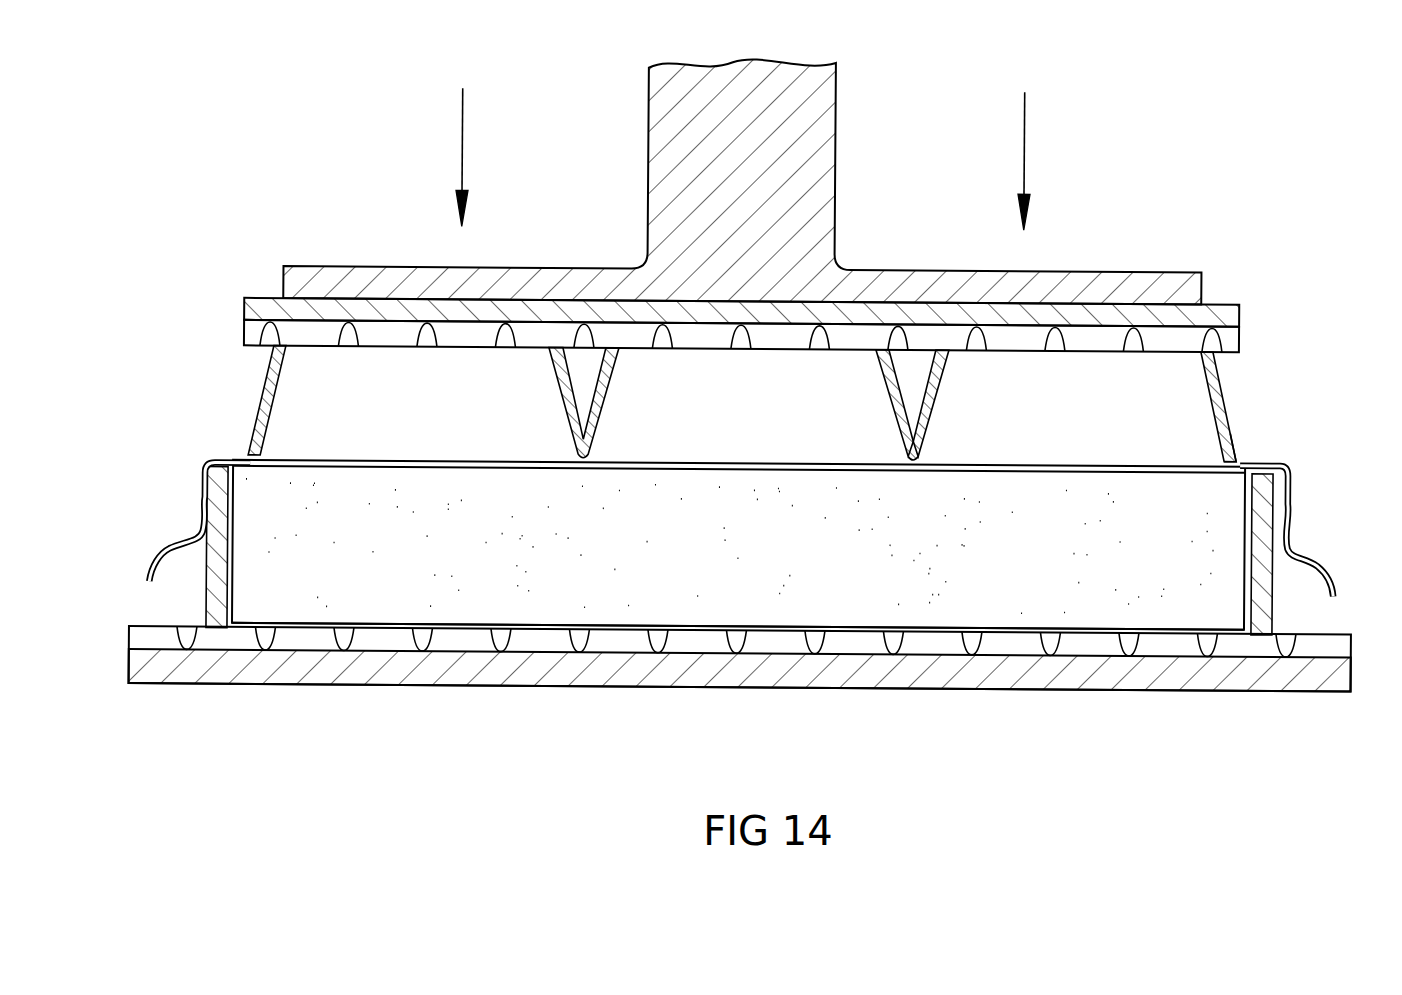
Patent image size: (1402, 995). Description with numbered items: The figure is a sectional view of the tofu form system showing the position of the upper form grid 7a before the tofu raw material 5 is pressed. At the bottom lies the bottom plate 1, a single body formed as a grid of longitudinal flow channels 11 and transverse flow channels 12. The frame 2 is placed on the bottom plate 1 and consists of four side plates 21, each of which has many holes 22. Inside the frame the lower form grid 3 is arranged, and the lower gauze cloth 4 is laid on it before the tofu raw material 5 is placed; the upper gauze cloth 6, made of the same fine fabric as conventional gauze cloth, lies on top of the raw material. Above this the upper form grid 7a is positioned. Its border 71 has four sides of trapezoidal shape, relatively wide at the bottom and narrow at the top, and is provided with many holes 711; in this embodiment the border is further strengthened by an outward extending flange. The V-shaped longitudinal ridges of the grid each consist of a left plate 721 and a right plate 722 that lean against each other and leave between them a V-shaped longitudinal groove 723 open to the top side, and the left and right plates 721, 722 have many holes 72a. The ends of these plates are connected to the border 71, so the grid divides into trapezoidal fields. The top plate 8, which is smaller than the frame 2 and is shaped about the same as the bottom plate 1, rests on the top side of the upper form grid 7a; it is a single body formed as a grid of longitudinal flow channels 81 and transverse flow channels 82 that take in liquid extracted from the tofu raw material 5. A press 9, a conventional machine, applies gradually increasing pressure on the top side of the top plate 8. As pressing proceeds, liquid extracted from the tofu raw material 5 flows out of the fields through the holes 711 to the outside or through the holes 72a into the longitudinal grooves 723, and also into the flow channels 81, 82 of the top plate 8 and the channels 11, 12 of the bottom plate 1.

The bottom plate 1 is at (115, 641).
The longitudinal flow channels 11 is at (302, 686).
The transverse flow channels 12 is at (385, 644).
The frame 2 is at (198, 571).
The side plates 21 is at (1257, 520).
The holes 22 is at (1265, 580).
The lower form grid 3 is at (280, 607).
The lower gauze cloth 4 is at (455, 624).
The tofu raw material 5 is at (668, 600).
The upper gauze cloth 6 is at (487, 463).
The upper form grid 7a is at (255, 413).
The border 71 is at (1222, 396).
The holes 711 is at (1230, 436).
The left plate 721 is at (893, 431).
The right plate 722 is at (933, 396).
The V-shaped longitudinal groove 723 is at (910, 381).
The holes 72a is at (925, 444).
The top plate 8 is at (1228, 302).
The longitudinal flow channels 81 is at (505, 335).
The transverse flow channels 82 is at (1097, 332).
The press 9 is at (362, 281).